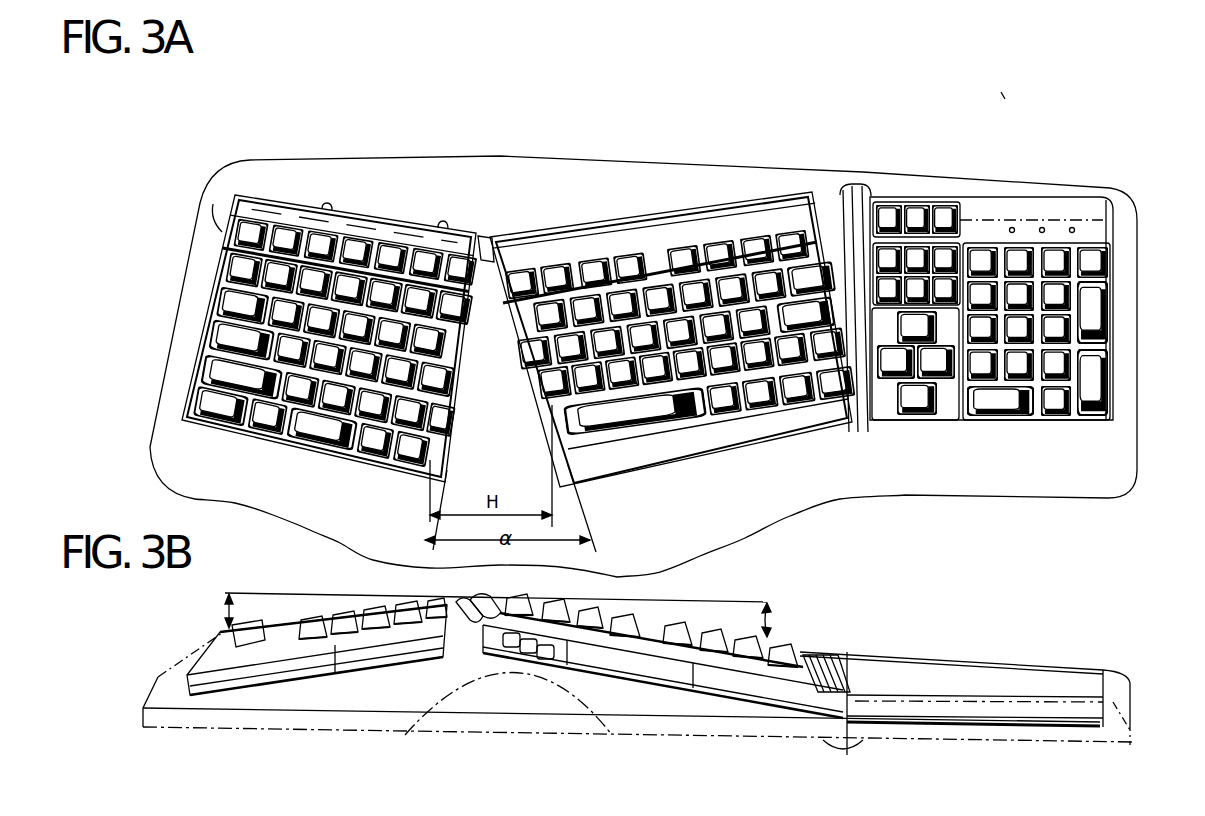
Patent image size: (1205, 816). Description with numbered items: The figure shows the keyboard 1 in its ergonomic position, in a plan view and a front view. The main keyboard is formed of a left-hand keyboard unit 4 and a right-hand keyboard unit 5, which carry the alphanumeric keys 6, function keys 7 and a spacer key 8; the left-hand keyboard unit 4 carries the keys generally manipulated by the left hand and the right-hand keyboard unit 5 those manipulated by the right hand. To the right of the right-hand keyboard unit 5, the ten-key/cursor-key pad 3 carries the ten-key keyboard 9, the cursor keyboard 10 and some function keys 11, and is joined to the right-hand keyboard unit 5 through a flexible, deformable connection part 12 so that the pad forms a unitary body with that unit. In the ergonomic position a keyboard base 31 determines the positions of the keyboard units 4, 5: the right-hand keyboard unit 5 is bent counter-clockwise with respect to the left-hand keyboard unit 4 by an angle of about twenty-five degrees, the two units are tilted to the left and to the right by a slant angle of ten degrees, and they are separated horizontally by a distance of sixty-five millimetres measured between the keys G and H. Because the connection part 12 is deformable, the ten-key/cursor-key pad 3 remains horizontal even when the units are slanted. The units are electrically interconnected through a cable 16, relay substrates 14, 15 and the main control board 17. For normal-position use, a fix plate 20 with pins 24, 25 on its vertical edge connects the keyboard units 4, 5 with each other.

In FIG. 3A, the keyboard 1 is at (722, 145).
In FIG. 3B, the keyboard 1 is at (855, 604).
In FIG. 3A, the ten-key/cursor-key pad 3 is at (934, 437).
In FIG. 3B, the ten-key/cursor-key pad 3 is at (935, 706).
In FIG. 3A, the left-hand keyboard unit 4 is at (253, 441).
In FIG. 3B, the left-hand keyboard unit 4 is at (298, 688).
In FIG. 3A, the right-hand keyboard unit 5 is at (703, 459).
In FIG. 3B, the right-hand keyboard unit 5 is at (688, 698).
In FIG. 3A, the alphanumeric keys 6 is at (523, 272).
In FIG. 3A, the function keys 7 is at (527, 262).
In FIG. 3A, the spacer key 8 is at (398, 450).
In FIG. 3A, the ten-key keyboard 9 is at (1022, 342).
In FIG. 3A, the cursor keyboard 10 is at (938, 382).
In FIG. 3A, the function keys 11 is at (900, 206).
In FIG. 3A, the connection part 12 is at (857, 188).
In FIG. 3B, the connection part 12 is at (840, 662).
In FIG. 3A, the relay substrate 14 is at (219, 226).
In FIG. 3A, the relay substrate 15 is at (798, 192).
In FIG. 3A, the cable 16 is at (486, 246).
In FIG. 3B, the cable 16 is at (480, 600).
In FIG. 3A, the main control board 17 is at (1048, 221).
In FIG. 3A, the fix plate 20 is at (393, 230).
In FIG. 3A, the pin 24 is at (326, 203).
In FIG. 3A, the pin 25 is at (443, 221).
In FIG. 3A, the keyboard base 31 is at (963, 494).